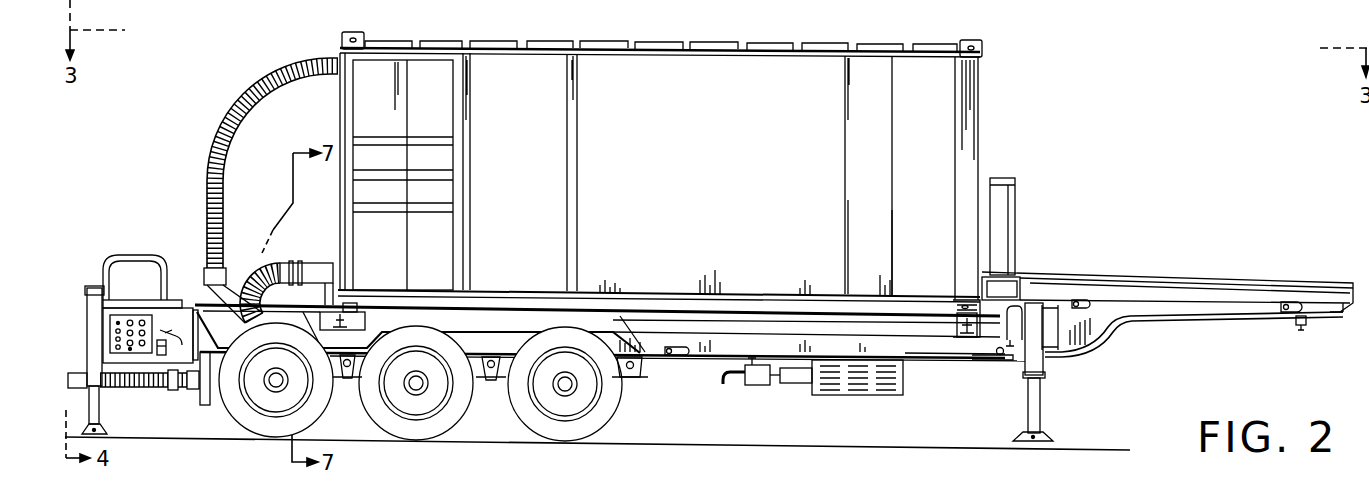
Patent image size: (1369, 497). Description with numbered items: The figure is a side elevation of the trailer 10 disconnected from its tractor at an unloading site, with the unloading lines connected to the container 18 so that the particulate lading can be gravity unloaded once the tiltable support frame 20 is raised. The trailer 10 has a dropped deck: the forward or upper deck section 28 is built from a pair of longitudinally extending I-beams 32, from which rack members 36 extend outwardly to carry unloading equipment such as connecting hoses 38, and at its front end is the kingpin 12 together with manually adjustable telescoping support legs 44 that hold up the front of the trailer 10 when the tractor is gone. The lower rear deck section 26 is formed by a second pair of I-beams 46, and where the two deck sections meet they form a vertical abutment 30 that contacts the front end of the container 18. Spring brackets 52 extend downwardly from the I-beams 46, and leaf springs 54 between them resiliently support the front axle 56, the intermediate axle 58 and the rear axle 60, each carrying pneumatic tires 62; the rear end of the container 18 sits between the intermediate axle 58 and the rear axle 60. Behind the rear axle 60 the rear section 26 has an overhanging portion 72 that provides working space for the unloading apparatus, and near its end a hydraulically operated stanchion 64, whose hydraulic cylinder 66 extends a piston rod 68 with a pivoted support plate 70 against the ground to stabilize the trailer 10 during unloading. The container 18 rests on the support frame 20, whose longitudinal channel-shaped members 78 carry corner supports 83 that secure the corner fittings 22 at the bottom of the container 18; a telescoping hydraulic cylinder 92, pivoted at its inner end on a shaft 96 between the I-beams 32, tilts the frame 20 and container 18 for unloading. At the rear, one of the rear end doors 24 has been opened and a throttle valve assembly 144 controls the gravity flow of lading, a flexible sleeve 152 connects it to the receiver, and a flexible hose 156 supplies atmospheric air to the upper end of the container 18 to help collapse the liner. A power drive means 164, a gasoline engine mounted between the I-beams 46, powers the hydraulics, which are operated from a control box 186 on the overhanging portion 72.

The trailer 10 is at (1136, 238).
The kingpin 12 is at (1305, 324).
The container 18 is at (983, 70).
The tiltable support frame 20 is at (709, 370).
The corner fittings 22 is at (352, 305).
The rear end doors 24 is at (377, 68).
The rear deck section 26 is at (718, 345).
The upper deck section 28 is at (1172, 268).
The vertical abutment 30 is at (985, 318).
The I-beams 32 is at (1160, 310).
The rack members 36 is at (1088, 310).
The connecting hoses 38 is at (1253, 290).
The telescoping support legs 44 is at (1035, 403).
The I-beams 46 is at (935, 355).
The spring brackets 52 is at (347, 375).
The leaf springs 54 is at (627, 378).
The front axle 56 is at (566, 390).
The intermediate axle 58 is at (417, 389).
The rear axle 60 is at (275, 386).
The pneumatic tires 62 is at (400, 422).
The stanchions 64 is at (97, 275).
The hydraulic cylinder 66 is at (92, 328).
The extensible piston rod 68 is at (97, 405).
The pivoted support plate 70 is at (106, 433).
The overhanging portion 72 is at (186, 282).
The channel-shaped members 78 is at (648, 322).
The corner supports 83 is at (357, 303).
The hydraulic cylinder 92 is at (1005, 193).
The shaft 96 is at (999, 355).
The throttle valve assembly 144 is at (327, 265).
The flexible sleeve 152 is at (252, 253).
The flexible hose 156 is at (213, 155).
The power drive means 164 is at (830, 380).
The control box 186 is at (138, 318).